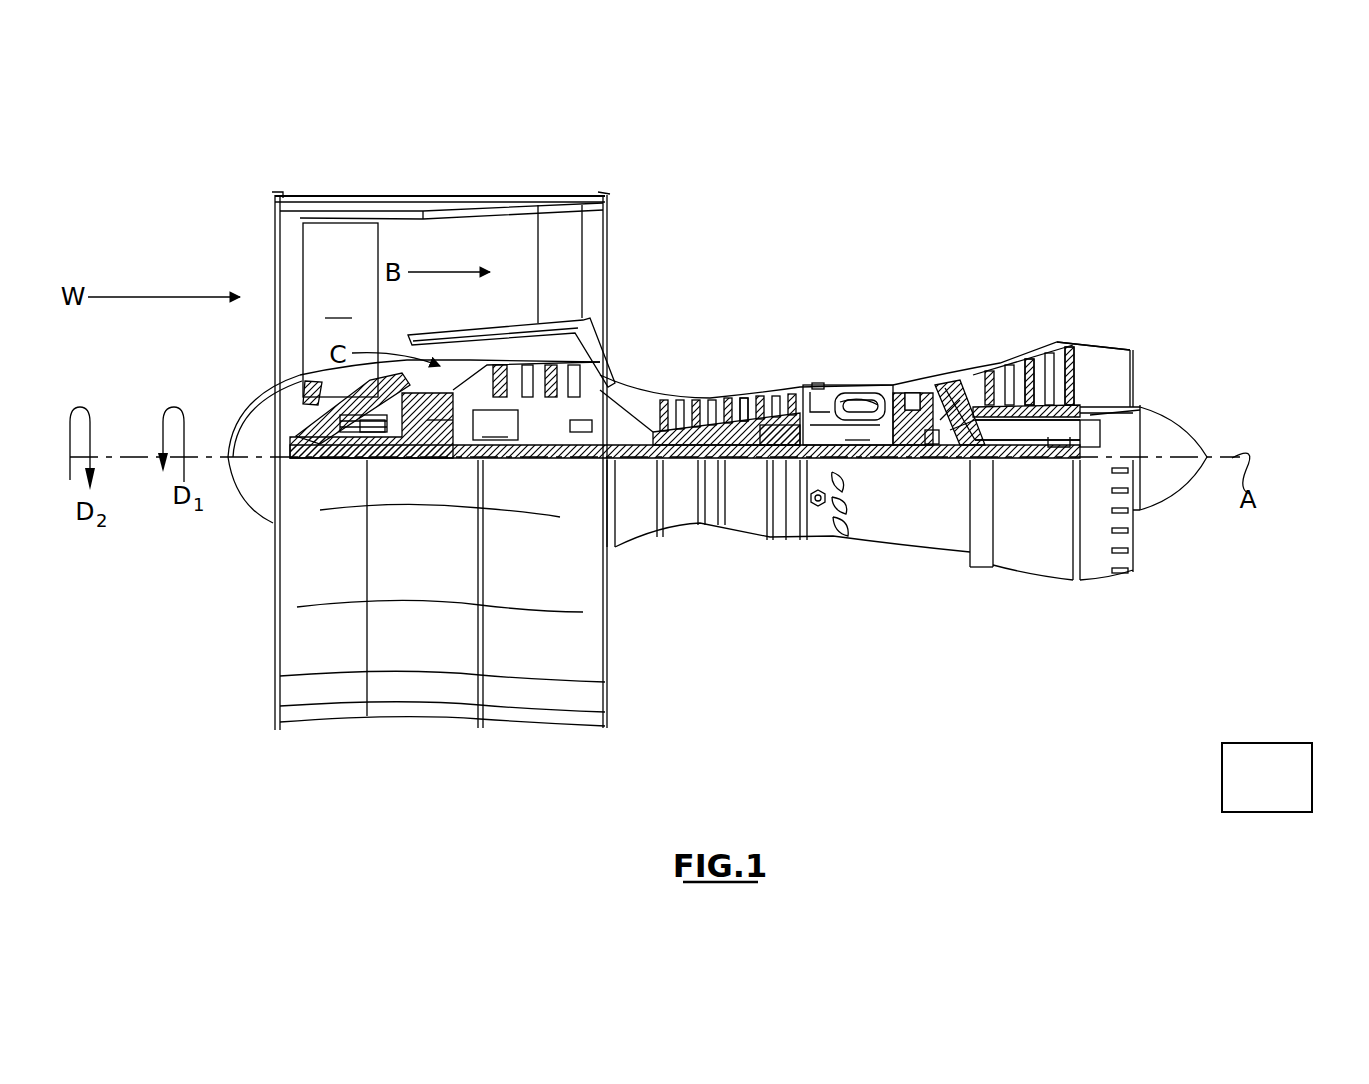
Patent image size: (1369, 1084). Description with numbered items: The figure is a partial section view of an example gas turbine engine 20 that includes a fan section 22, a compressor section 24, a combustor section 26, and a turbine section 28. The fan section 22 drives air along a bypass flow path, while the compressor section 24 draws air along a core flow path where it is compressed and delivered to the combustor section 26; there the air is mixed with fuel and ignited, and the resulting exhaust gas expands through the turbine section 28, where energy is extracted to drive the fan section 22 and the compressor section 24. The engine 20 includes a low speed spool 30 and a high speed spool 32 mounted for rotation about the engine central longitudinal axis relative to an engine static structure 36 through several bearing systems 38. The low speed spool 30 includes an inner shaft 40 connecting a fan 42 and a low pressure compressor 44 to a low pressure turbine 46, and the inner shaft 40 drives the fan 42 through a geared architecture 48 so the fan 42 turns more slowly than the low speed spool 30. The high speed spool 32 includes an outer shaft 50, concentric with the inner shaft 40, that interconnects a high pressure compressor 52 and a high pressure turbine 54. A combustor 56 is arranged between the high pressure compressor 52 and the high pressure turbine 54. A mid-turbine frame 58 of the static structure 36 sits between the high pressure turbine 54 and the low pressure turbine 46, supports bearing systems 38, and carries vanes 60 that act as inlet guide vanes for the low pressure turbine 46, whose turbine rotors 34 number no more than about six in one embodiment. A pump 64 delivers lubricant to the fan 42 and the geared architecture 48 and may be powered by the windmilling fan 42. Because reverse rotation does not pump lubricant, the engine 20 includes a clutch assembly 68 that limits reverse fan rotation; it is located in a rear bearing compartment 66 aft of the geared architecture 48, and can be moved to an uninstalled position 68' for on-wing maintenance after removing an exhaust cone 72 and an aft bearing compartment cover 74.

The gas turbine engine 20 is at (862, 243).
The fan section 22 is at (377, 192).
The compressor section 24 is at (652, 372).
The combustor section 26 is at (853, 358).
The turbine section 28 is at (987, 330).
The low speed spool 30 is at (749, 465).
The high speed spool 32 is at (787, 425).
The turbine rotors 34 is at (1078, 358).
The engine static structure 36 is at (786, 542).
The bearing systems 38 is at (372, 452).
The inner shaft 40 is at (632, 535).
The fan 42 is at (442, 475).
The low pressure compressor section 44 is at (548, 367).
The low pressure turbine section 46 is at (1029, 355).
The geared architecture 48 is at (449, 448).
The outer shaft 50 is at (858, 440).
The high pressure compressor section 52 is at (742, 396).
The high pressure turbine section 54 is at (912, 392).
The combustor 56 is at (855, 404).
The mid-turbine frame 58 is at (952, 378).
The vanes 60 is at (972, 433).
The pump 64 is at (495, 425).
The rear bearing compartment 66 is at (1146, 388).
The clutch assembly 68 is at (1062, 471).
The uninstalled position 68' is at (1279, 747).
The exhaust cone 72 is at (1170, 430).
The aft bearing compartment cover 74 is at (1105, 432).